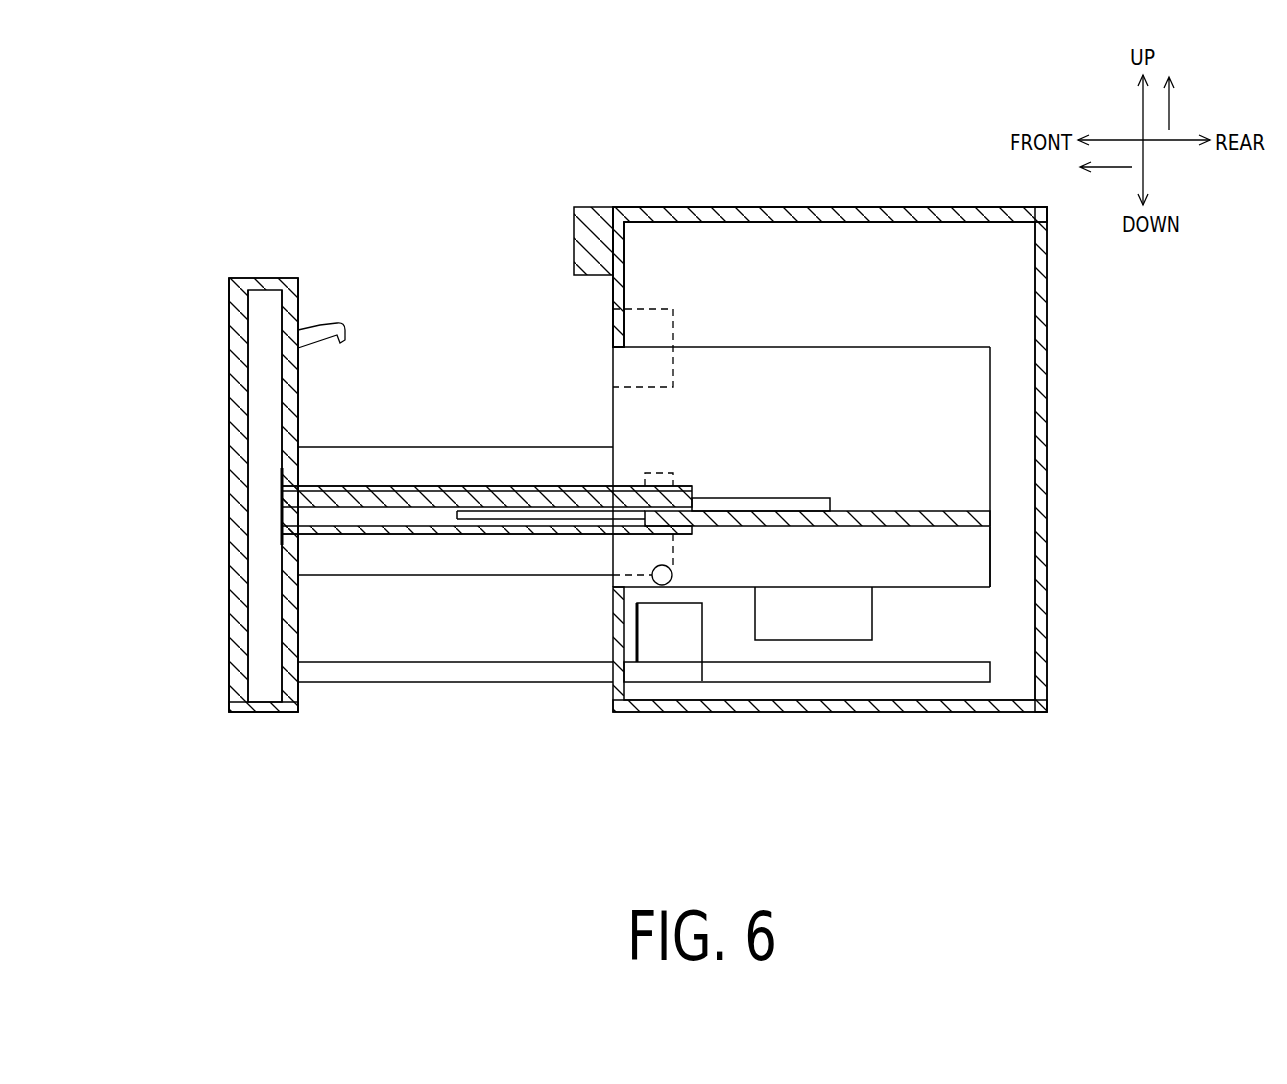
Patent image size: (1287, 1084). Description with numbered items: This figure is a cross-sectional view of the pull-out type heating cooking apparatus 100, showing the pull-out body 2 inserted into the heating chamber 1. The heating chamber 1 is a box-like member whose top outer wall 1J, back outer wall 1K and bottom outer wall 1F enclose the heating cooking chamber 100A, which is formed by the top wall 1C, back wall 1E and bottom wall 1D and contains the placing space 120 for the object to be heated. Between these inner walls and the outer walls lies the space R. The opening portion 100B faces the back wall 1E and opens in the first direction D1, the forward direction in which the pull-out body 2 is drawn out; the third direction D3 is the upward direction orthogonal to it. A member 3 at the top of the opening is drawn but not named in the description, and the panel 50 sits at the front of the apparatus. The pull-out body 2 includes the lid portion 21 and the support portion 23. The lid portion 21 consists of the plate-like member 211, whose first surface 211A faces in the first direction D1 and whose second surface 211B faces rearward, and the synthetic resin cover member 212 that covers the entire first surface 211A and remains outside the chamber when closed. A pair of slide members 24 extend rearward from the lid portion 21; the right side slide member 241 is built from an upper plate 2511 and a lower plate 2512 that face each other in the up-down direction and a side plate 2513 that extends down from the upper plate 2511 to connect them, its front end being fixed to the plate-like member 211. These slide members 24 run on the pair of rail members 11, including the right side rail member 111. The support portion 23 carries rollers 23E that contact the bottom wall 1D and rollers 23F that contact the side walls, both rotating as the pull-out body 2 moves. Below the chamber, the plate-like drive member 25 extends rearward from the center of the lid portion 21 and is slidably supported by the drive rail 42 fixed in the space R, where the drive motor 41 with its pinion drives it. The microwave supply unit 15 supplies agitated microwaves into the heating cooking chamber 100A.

The heating chamber 1 is at (884, 175).
The top wall 1C is at (800, 347).
The bottom wall 1D is at (982, 587).
The back wall 1E is at (990, 555).
The bottom outer wall 1F is at (905, 713).
The top outer wall 1J is at (962, 207).
The back outer wall 1K is at (1048, 452).
The pull-out body 2 is at (262, 112).
The fixing block 3 is at (575, 232).
The rail members 11 is at (838, 510).
The right side rail member 111 is at (761, 504).
The microwave supply unit 15 is at (837, 640).
The lid portion 21 is at (257, 225).
The support portion 23 is at (410, 548).
The rollers 23E is at (657, 585).
The rollers 23F is at (673, 473).
The slide members 24 is at (560, 390).
The drive member 25 is at (582, 682).
The drive motor 41 is at (670, 662).
The drive rail 42 is at (781, 682).
The panel 50 is at (610, 618).
The pull-out type heating cooking apparatus 100 is at (826, 107).
The heating cooking chamber 100A is at (1003, 397).
The opening portion 100B is at (603, 411).
The placing space 120 is at (948, 568).
The plate-like member 211 is at (325, 795).
The first surface 211A is at (280, 625).
The second surface 211B is at (298, 692).
The cover member 212 is at (229, 358).
The right side slide member 241 is at (487, 510).
The upper plate 2511 is at (445, 488).
The lower plate 2512 is at (526, 526).
The side plate 2513 is at (387, 520).
The first direction D1 is at (1105, 167).
The third direction D3 is at (1169, 100).
The space R is at (1025, 592).